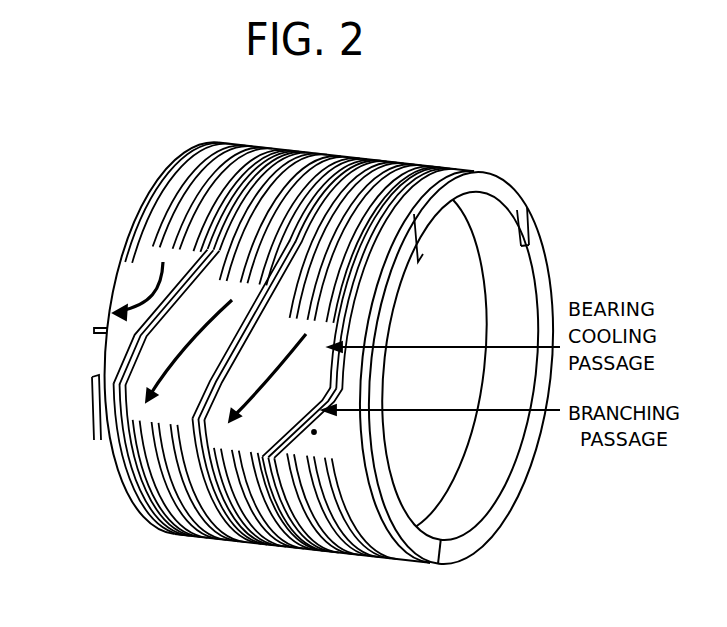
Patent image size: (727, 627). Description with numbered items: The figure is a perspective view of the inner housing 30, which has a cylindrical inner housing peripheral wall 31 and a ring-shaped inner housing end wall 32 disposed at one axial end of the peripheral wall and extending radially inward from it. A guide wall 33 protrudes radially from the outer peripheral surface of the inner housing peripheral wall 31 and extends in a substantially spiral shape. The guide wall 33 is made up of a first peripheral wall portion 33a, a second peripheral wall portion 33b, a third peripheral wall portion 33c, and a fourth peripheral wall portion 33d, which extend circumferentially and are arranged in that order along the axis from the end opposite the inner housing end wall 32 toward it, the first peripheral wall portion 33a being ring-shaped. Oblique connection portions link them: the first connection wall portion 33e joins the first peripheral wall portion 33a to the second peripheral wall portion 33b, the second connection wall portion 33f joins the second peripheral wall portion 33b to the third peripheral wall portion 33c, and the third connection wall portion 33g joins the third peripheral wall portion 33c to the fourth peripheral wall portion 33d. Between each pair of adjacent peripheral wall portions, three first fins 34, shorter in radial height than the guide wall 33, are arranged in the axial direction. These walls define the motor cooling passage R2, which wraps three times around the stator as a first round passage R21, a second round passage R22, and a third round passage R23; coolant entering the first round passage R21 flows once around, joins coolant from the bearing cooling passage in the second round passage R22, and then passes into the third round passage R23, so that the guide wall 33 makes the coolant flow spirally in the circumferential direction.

The inner housing 30 is at (106, 157).
The inner housing peripheral wall 31 is at (509, 184).
The inner housing end wall 32 is at (108, 307).
The guide wall 33 is at (393, 149).
The first peripheral wall portion 33a is at (356, 447).
The second peripheral wall portion 33b is at (323, 553).
The third peripheral wall portion 33c is at (250, 549).
The fourth peripheral wall portion 33d is at (97, 407).
The first connection wall portion 33e is at (250, 441).
The second connection wall portion 33f is at (150, 428).
The third connection wall portion 33g is at (140, 325).
The first fins 34 is at (237, 163).
The motor cooling passage R2 is at (145, 276).
The first round passage R21 is at (316, 432).
The second round passage R22 is at (297, 384).
The third round passage R23 is at (130, 388).